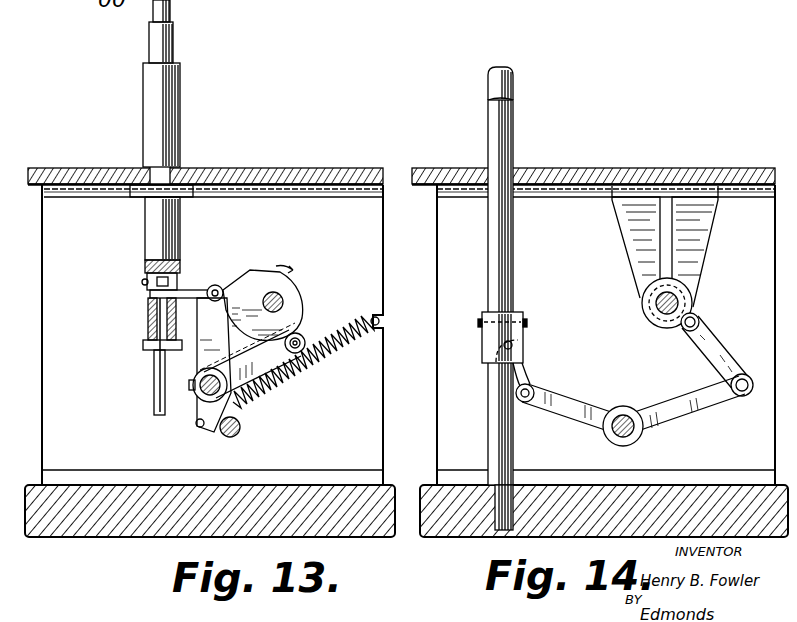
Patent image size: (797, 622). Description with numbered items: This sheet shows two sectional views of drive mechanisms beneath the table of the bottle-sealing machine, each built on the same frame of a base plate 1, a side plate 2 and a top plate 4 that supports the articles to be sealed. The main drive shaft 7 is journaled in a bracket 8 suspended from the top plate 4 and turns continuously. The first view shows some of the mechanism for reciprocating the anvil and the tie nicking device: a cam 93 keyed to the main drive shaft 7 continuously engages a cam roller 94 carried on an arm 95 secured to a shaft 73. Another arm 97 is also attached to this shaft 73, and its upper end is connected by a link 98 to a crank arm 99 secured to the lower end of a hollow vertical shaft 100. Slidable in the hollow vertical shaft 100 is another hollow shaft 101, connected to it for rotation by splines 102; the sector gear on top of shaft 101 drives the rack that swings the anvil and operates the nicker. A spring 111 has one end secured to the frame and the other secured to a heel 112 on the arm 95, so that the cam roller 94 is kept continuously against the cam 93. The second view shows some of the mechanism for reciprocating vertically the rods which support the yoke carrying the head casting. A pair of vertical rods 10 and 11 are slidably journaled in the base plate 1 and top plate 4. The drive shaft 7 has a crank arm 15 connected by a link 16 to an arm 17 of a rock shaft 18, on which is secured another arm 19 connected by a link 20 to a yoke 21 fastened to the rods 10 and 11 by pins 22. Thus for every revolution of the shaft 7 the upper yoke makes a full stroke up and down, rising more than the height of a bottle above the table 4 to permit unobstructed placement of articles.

In FIG. 13, the base plate 1 is at (368, 526).
In FIG. 14, the base plate 1 is at (465, 524).
In FIG. 13, the side plate 2 is at (372, 422).
In FIG. 14, the side plate 2 is at (448, 421).
In FIG. 13, the top plate 4 is at (288, 177).
In FIG. 14, the top plate 4 is at (605, 177).
In FIG. 13, the main drive shaft 7 is at (284, 300).
In FIG. 14, the main drive shaft 7 is at (660, 312).
In FIG. 14, the bracket 8 is at (628, 240).
In FIG. 14, the vertical rod 10 is at (515, 126).
In FIG. 14, the vertical rod 11 is at (515, 85).
In FIG. 14, the crank arm 15 is at (697, 318).
In FIG. 14, the link 16 is at (712, 347).
In FIG. 14, the arm 17 is at (665, 400).
In FIG. 13, the rock shaft 18 is at (238, 433).
In FIG. 14, the rock shaft 18 is at (633, 433).
In FIG. 14, the arm 19 is at (576, 420).
In FIG. 14, the link 20 is at (536, 380).
In FIG. 14, the yoke 21 is at (523, 333).
In FIG. 14, the pins 22 is at (481, 330).
In FIG. 13, the shaft 73 is at (200, 380).
In FIG. 13, the cam 93 is at (258, 292).
In FIG. 13, the cam roller 94 is at (305, 338).
In FIG. 13, the arm 95 is at (263, 380).
In FIG. 13, the arm 97 is at (212, 332).
In FIG. 13, the link 98 is at (194, 291).
In FIG. 13, the crank arm 99 is at (150, 295).
In FIG. 13, the hollow vertical shaft 100 is at (158, 138).
In FIG. 13, the hollow shaft 101 is at (149, 40).
In FIG. 13, the splines 102 is at (170, 49).
In FIG. 13, the spring 111 is at (306, 352).
In FIG. 13, the heel 112 is at (199, 428).